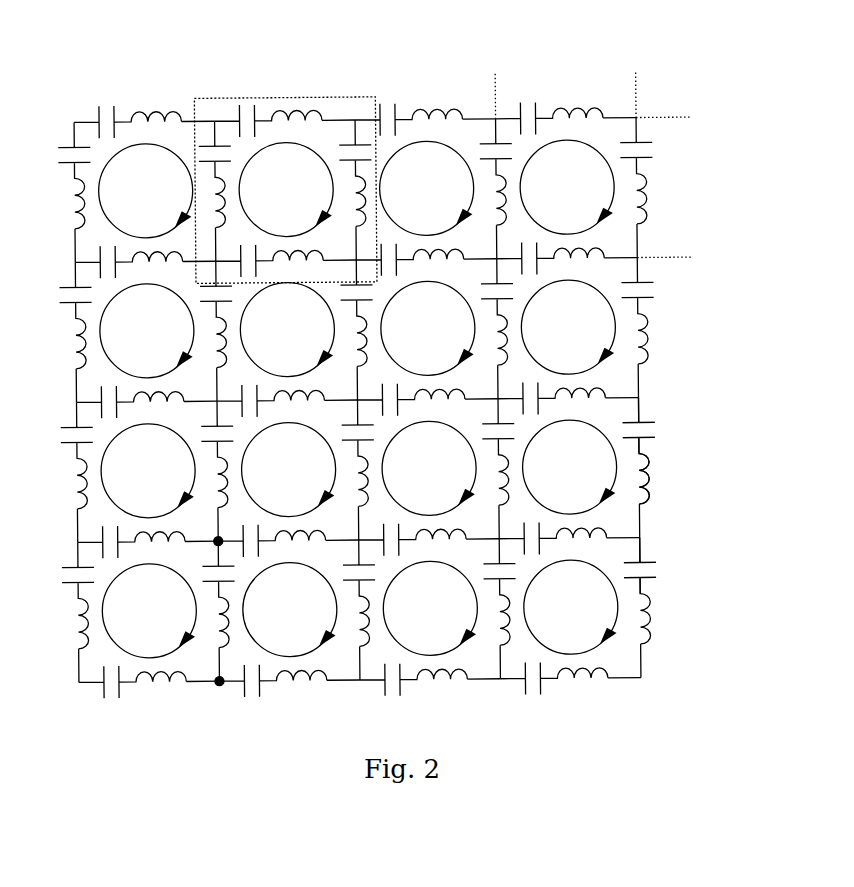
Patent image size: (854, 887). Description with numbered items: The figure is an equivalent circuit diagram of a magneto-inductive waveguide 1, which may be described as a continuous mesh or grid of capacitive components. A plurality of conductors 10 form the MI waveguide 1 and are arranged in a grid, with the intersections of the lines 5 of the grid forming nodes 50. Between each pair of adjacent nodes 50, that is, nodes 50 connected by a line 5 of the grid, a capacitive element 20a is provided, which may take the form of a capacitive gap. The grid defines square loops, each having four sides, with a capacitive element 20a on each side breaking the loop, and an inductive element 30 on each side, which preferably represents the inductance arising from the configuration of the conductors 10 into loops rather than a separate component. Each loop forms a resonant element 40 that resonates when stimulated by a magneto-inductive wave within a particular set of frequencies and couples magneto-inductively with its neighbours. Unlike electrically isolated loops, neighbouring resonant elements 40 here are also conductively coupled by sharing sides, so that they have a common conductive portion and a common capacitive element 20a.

The MI waveguide 1 is at (196, 74).
The resonant element 40 is at (323, 99).
The lines of the grid 5 is at (502, 88).
The conductors 10 is at (647, 448).
The inductive element 30 is at (648, 490).
The capacitive element 20a is at (652, 562).
The node 50 is at (218, 545).